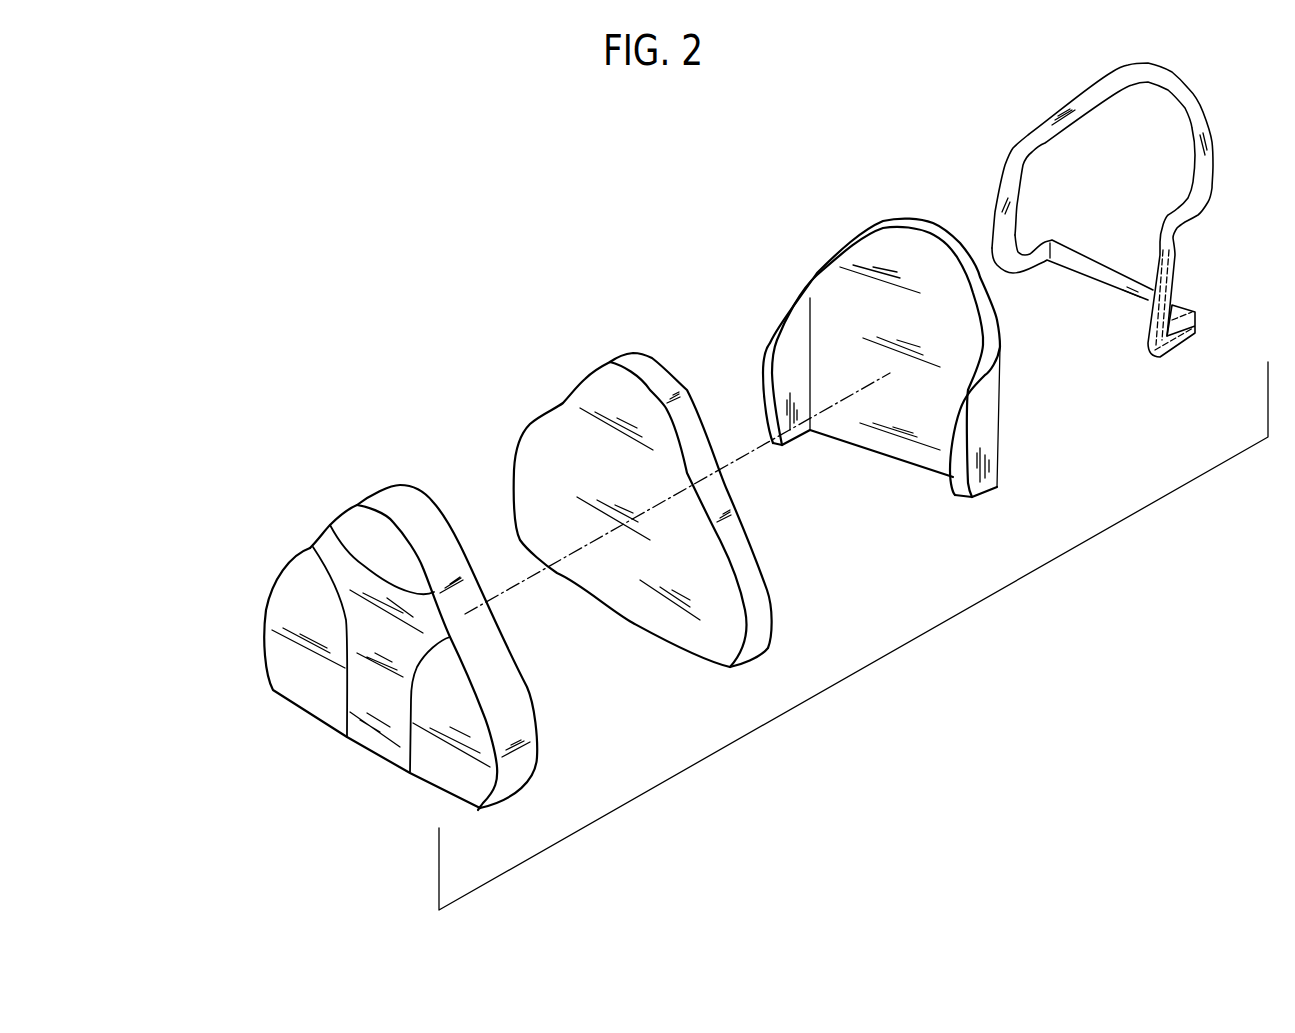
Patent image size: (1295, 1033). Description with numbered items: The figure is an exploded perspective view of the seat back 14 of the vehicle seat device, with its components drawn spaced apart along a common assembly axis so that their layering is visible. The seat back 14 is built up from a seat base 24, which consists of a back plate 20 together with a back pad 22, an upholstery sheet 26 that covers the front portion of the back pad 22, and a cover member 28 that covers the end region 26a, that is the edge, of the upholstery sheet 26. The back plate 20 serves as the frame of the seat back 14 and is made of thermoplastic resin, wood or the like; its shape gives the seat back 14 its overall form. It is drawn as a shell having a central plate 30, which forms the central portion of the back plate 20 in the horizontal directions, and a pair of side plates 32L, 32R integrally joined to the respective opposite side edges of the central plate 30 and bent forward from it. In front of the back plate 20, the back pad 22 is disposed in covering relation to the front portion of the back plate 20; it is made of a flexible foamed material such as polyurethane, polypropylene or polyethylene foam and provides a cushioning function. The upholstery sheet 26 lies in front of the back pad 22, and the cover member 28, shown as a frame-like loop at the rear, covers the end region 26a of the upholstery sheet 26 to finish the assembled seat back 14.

The seat back 14 is at (491, 178).
The back plate 20 is at (942, 483).
The back pad 22 is at (750, 570).
The seat base 24 is at (932, 570).
The upholstery sheet 26 is at (373, 740).
The end region 26a is at (507, 673).
The cover member 28 is at (1213, 151).
The central plate 30 is at (907, 240).
The side plate 32R is at (782, 368).
The side plate 32L is at (983, 417).